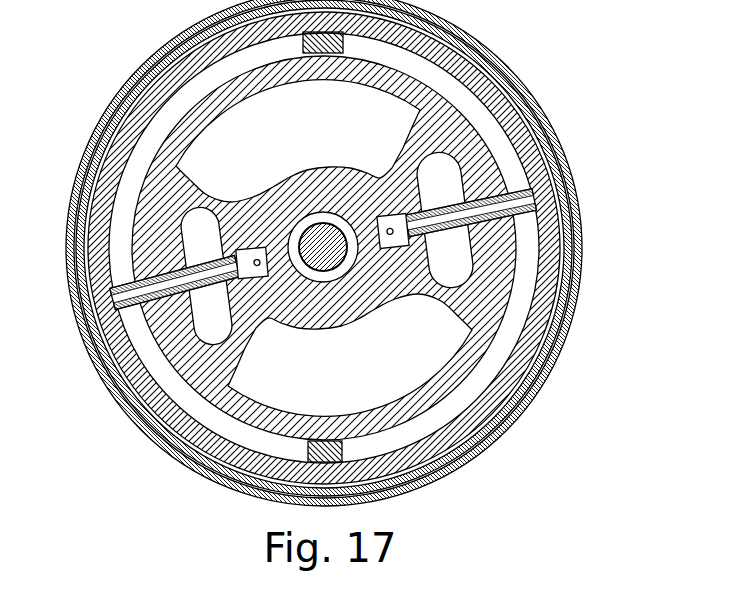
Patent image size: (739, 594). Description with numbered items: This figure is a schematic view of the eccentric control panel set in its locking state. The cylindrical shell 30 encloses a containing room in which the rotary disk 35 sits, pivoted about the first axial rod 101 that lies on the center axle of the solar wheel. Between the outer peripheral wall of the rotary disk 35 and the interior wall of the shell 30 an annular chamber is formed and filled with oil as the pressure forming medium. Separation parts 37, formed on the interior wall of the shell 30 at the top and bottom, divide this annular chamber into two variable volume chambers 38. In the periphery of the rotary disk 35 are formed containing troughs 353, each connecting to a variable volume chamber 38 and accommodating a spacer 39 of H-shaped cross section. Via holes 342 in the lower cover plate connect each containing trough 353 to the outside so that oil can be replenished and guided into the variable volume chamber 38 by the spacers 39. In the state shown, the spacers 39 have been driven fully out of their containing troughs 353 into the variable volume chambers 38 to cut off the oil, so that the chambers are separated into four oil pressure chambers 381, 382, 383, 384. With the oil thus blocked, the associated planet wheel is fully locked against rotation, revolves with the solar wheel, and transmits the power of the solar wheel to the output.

The shell 30 is at (556, 160).
The rotary disk 35 is at (324, 248).
The separation part 37 is at (322, 56).
The variable volume chamber 38 is at (128, 77).
The spacer 39 is at (112, 313).
The first axial rod 101 is at (318, 238).
The via hole 342 is at (391, 236).
The containing trough 353 is at (430, 175).
The oil pressure chamber 381 is at (472, 98).
The oil pressure chamber 382 is at (511, 392).
The oil pressure chamber 383 is at (191, 409).
The oil pressure chamber 384 is at (140, 152).